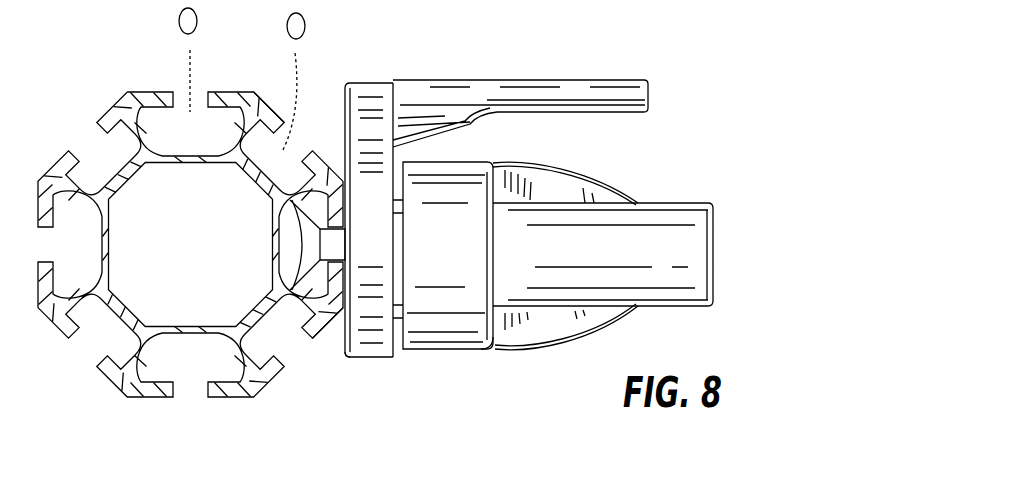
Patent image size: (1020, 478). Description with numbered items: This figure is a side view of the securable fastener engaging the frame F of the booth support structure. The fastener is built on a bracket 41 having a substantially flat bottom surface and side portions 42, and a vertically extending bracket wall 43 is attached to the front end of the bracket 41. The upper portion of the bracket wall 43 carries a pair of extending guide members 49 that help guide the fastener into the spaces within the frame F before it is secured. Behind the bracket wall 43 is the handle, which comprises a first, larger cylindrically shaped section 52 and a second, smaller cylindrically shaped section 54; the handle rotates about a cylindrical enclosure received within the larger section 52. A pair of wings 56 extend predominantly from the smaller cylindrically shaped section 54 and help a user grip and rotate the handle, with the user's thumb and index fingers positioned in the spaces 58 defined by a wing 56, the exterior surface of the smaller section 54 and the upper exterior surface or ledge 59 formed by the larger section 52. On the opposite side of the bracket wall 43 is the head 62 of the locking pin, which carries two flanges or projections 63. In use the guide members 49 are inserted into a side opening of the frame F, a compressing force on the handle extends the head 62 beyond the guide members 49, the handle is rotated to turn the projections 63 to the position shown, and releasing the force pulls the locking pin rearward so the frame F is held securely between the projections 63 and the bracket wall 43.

The frame F is at (98, 90).
The bracket 41 is at (398, 137).
The side portions 42 is at (482, 100).
The bracket wall 43 is at (343, 133).
The extending guide members 49 is at (330, 322).
The larger cylindrically shaped section 52 is at (492, 161).
The smaller cylindrically shaped section 54 is at (648, 202).
The wings 56 is at (551, 187).
The spaces 58 is at (398, 357).
The ledge 59 is at (498, 340).
The head 62 is at (315, 278).
The projections 63 is at (249, 135).